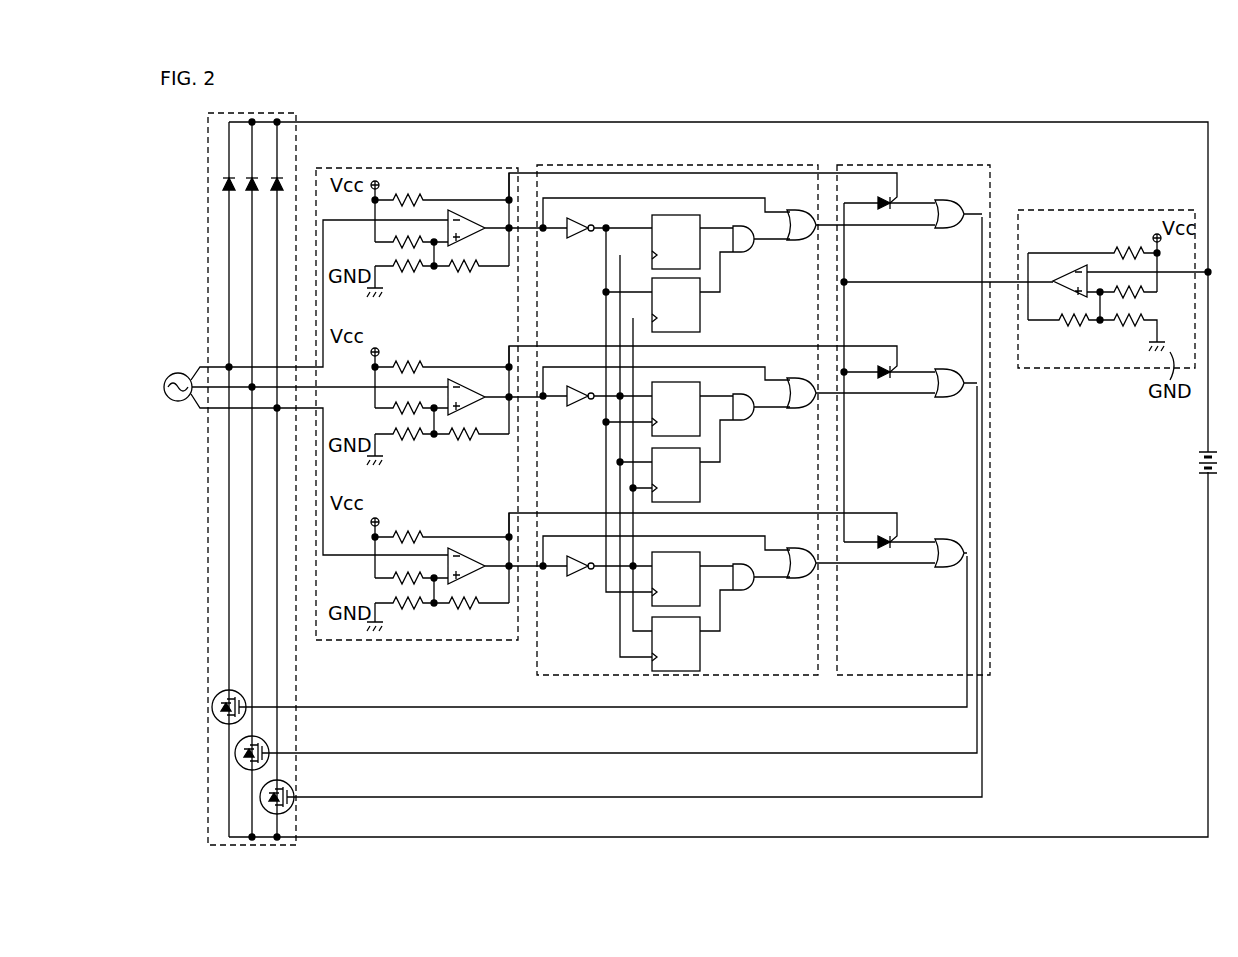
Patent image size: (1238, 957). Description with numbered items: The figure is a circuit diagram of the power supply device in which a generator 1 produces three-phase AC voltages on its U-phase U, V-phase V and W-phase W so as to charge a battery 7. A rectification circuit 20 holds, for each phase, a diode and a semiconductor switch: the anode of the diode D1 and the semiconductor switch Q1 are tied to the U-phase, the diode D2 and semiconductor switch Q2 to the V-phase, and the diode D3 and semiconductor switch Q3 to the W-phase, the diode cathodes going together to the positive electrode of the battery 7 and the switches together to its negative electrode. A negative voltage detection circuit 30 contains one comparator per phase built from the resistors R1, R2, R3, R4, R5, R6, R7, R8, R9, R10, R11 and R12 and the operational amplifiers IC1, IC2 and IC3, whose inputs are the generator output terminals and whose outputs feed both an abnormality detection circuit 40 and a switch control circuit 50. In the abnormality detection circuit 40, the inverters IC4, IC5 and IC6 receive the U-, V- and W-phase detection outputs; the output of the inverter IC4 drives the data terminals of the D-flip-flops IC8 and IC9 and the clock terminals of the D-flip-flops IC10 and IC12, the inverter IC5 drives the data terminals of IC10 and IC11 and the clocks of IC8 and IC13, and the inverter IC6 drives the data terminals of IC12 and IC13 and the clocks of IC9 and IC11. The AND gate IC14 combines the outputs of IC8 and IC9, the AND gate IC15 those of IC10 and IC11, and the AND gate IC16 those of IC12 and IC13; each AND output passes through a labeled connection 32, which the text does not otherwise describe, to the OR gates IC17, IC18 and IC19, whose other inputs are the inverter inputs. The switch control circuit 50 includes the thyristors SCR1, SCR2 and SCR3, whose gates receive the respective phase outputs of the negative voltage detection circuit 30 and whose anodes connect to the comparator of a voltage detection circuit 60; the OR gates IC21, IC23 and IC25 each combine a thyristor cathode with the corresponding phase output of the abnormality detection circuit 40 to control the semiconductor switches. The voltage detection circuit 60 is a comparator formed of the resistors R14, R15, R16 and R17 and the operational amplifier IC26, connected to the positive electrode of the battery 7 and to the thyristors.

The generator 1 is at (172, 377).
The battery 7 is at (1200, 465).
The rectification circuit 20 is at (207, 160).
The negative voltage detection circuit 30 is at (370, 168).
The abnormality detection circuit 40 is at (648, 165).
The switch control circuit 50 is at (898, 165).
The voltage detection circuit 60 is at (1047, 210).
The AND gate output node 32 is at (767, 242).
The U-phase U is at (210, 365).
The V-phase V is at (207, 395).
The W-phase W is at (212, 412).
The diode D1 is at (225, 193).
The diode D2 is at (248, 193).
The diode D3 is at (273, 193).
The semiconductor switch Q1 is at (220, 692).
The semiconductor switch Q2 is at (240, 746).
The semiconductor switch Q3 is at (262, 793).
The resistor R1 is at (406, 196).
The resistor R2 is at (400, 248).
The resistor R3 is at (398, 274).
The resistor R4 is at (468, 274).
The resistor R5 is at (406, 363).
The resistor R6 is at (400, 414).
The resistor R7 is at (398, 442).
The resistor R8 is at (468, 442).
The resistor R9 is at (406, 533).
The resistor R10 is at (400, 584).
The resistor R11 is at (398, 611).
The resistor R12 is at (468, 611).
The resistor R14 is at (1124, 247).
The resistor R15 is at (1140, 297).
The resistor R16 is at (1128, 326).
The resistor R17 is at (1070, 326).
The operational amplifier IC1 is at (462, 214).
The operational amplifier IC2 is at (462, 383).
The operational amplifier IC3 is at (462, 552).
The inverter IC4 is at (578, 240).
The inverter IC5 is at (578, 408).
The inverter IC6 is at (578, 578).
The D-flip-flop IC8 is at (678, 215).
The D-flip-flop IC9 is at (702, 320).
The D-flip-flop IC10 is at (678, 382).
The D-flip-flop IC11 is at (702, 490).
The D-flip-flop IC12 is at (678, 552).
The D-flip-flop IC13 is at (702, 659).
The AND gate IC14 is at (747, 254).
The AND gate IC15 is at (747, 422).
The AND gate IC16 is at (747, 592).
The OR gate IC17 is at (800, 244).
The OR gate IC18 is at (800, 412).
The OR gate IC19 is at (800, 582).
The OR gate IC21 is at (952, 230).
The OR gate IC23 is at (952, 399).
The OR gate IC25 is at (952, 569).
The operational amplifier IC26 is at (1068, 266).
The thyristor SCR1 is at (886, 212).
The thyristor SCR2 is at (886, 381).
The thyristor SCR3 is at (886, 551).